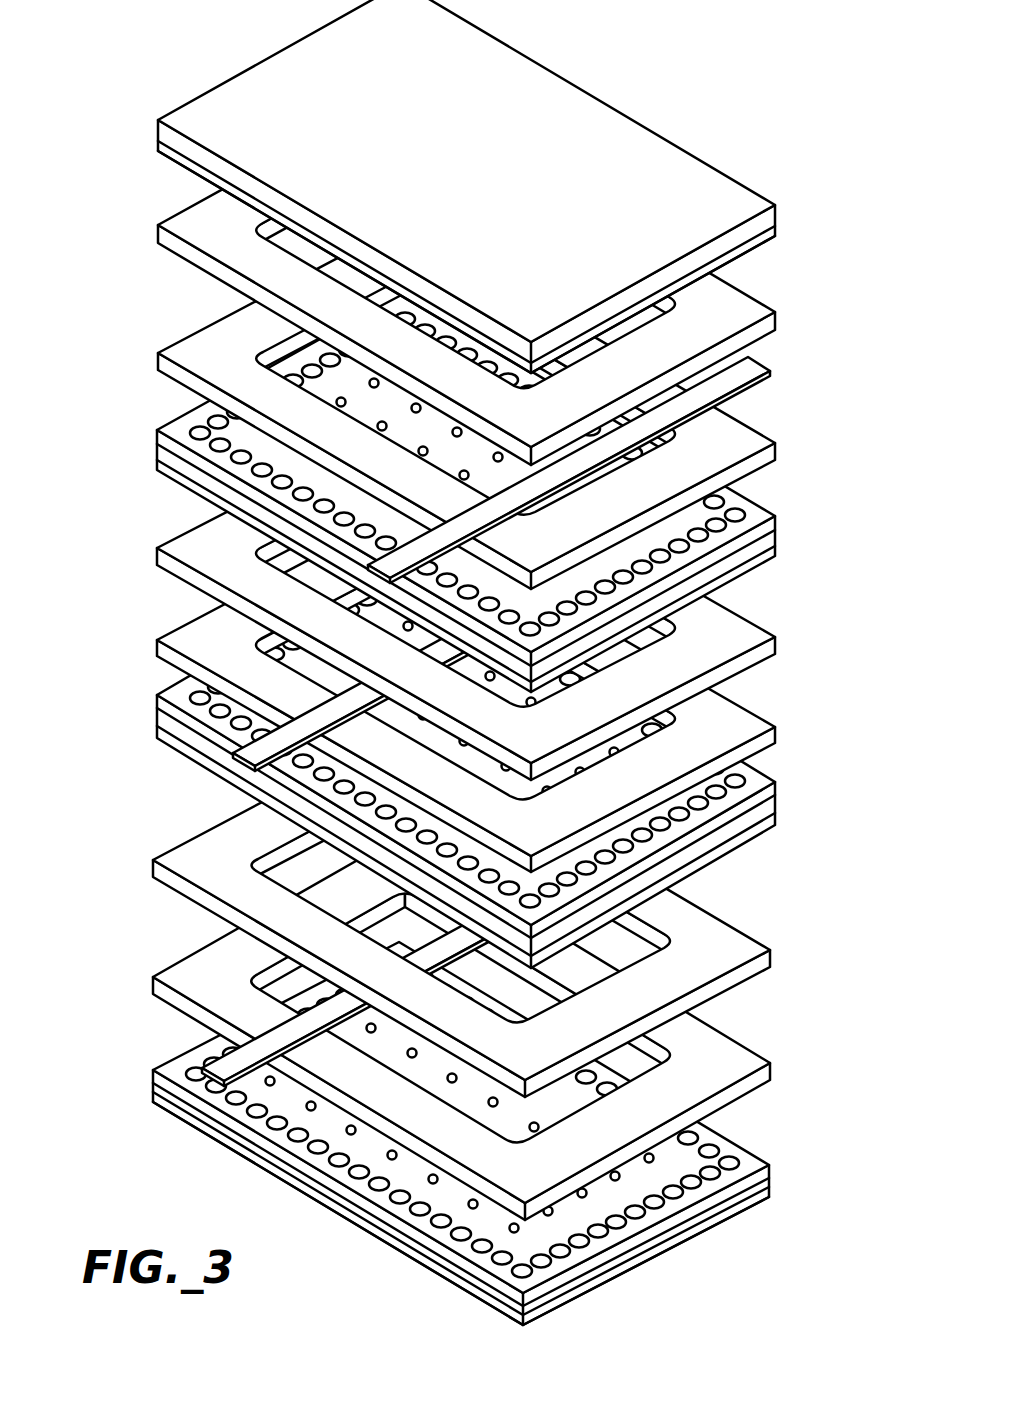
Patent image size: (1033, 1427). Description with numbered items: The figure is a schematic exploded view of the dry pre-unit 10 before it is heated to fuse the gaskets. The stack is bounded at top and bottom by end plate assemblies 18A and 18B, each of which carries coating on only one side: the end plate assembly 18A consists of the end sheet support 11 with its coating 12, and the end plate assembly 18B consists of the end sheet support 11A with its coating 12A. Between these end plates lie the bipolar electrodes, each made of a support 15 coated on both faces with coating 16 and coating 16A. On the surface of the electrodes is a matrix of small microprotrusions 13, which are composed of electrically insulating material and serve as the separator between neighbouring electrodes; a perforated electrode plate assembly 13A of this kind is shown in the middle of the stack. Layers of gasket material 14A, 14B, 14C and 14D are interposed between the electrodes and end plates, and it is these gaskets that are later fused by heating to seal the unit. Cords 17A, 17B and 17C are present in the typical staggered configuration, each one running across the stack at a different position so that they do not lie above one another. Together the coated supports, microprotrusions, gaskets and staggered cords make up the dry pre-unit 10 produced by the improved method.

The dry pre-unit 10 is at (753, 79).
The end sheet support 11 is at (780, 215).
The end sheet support 11A is at (747, 1207).
The coating 12 is at (767, 245).
The coating 12A is at (770, 1170).
The microprotrusions 13 is at (508, 1021).
The perforated electrode plate assembly 13A is at (710, 866).
The gasket material 14A is at (730, 620).
The gasket material 14B is at (743, 702).
The gasket material 14C is at (771, 952).
The gasket material 14D is at (770, 1077).
The support 15 is at (777, 805).
The coating 16 is at (777, 782).
The coating 16A is at (777, 820).
The cord 17A is at (207, 1077).
The cord 17B is at (240, 757).
The cord 17C is at (770, 356).
The end plate assembly 18A is at (237, 77).
The end plate assembly 18B is at (677, 1243).